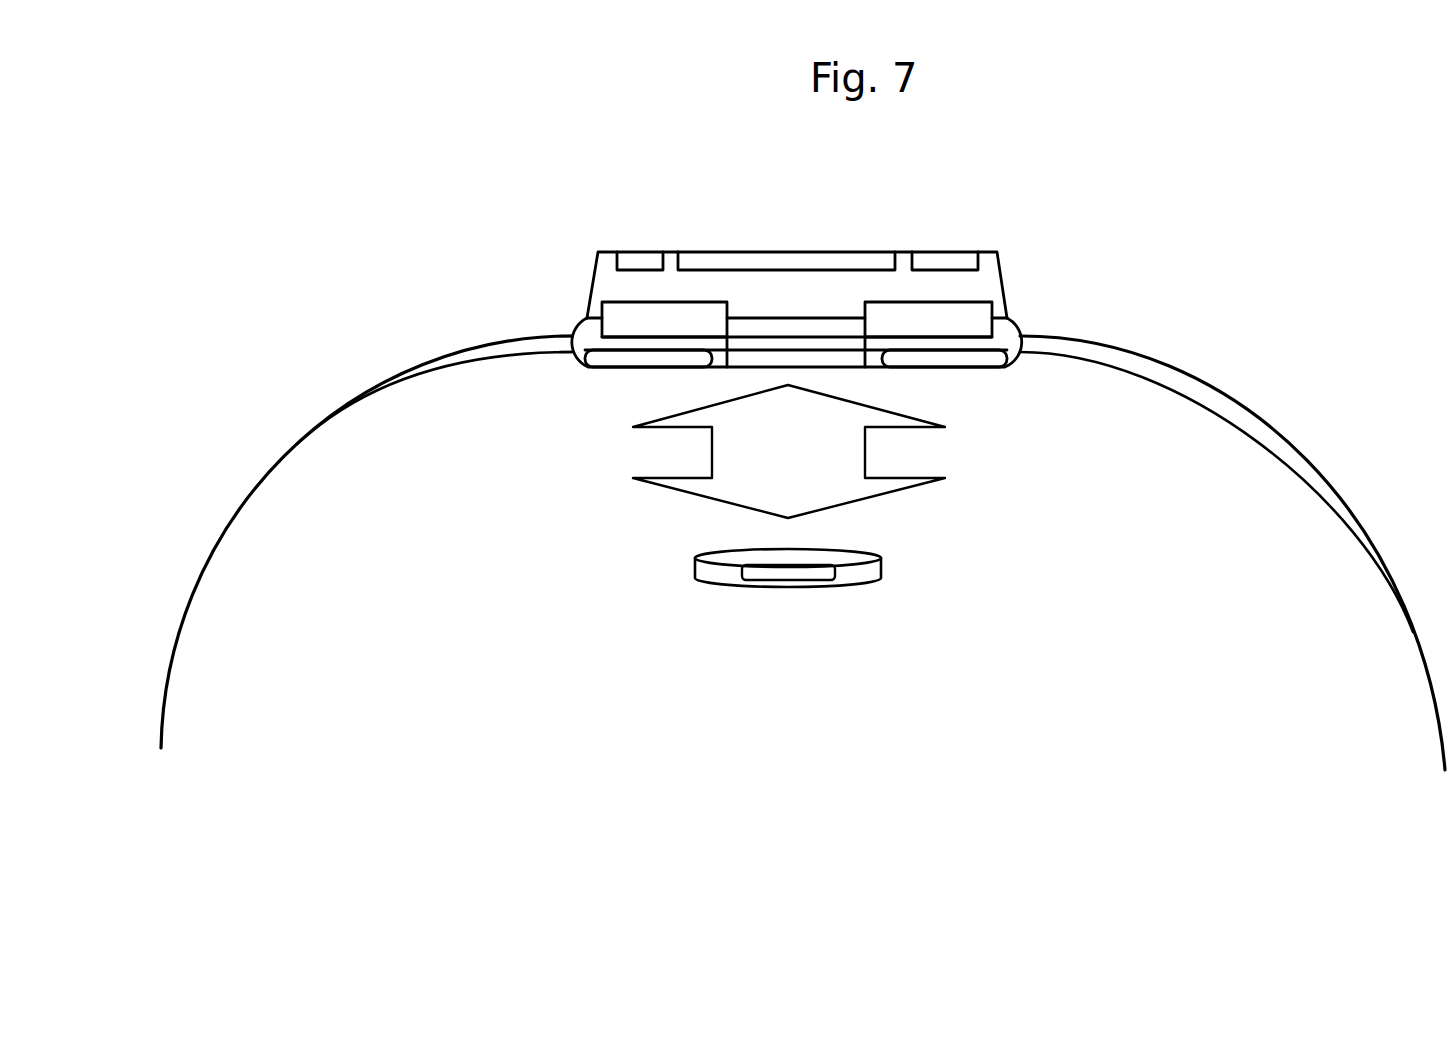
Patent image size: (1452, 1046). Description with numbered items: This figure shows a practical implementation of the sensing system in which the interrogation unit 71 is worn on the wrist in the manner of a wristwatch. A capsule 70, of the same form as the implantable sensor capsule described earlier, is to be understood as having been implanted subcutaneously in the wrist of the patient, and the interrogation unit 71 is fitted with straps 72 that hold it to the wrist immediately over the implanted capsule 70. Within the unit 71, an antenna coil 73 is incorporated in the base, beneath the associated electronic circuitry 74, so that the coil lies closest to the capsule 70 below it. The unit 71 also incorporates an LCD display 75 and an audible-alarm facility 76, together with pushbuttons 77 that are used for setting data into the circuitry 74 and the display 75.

The capsule 70 is at (880, 583).
The interrogation unit 71 is at (553, 266).
The straps 72 is at (255, 508).
The antenna coil 73 is at (622, 365).
The electronic circuitry 74 is at (970, 315).
The LCD display 75 is at (788, 258).
The audible-alarm facility 76 is at (948, 255).
The pushbuttons 77 is at (640, 248).